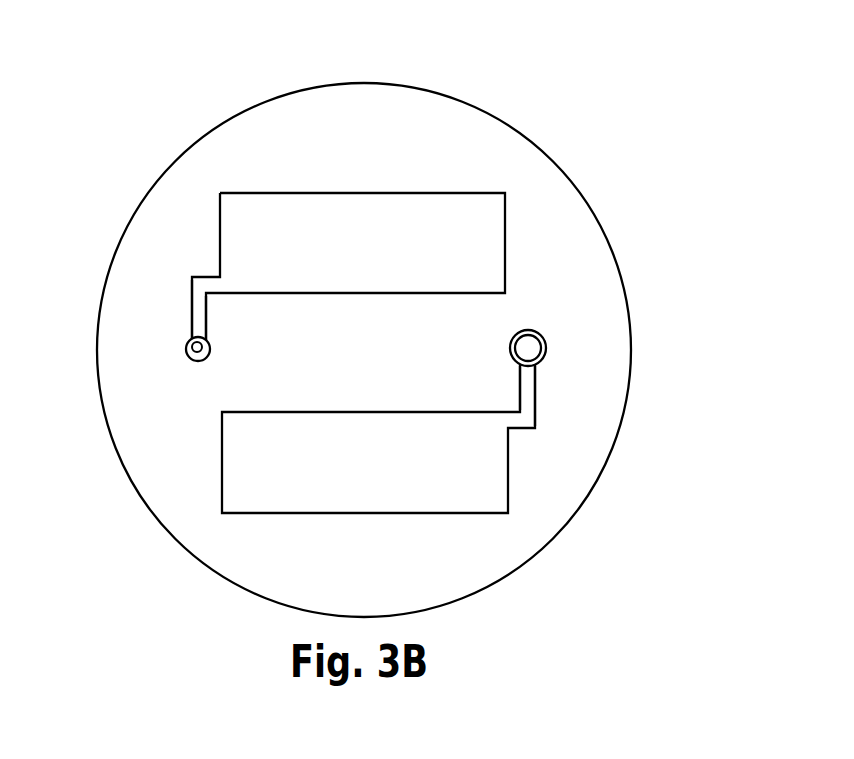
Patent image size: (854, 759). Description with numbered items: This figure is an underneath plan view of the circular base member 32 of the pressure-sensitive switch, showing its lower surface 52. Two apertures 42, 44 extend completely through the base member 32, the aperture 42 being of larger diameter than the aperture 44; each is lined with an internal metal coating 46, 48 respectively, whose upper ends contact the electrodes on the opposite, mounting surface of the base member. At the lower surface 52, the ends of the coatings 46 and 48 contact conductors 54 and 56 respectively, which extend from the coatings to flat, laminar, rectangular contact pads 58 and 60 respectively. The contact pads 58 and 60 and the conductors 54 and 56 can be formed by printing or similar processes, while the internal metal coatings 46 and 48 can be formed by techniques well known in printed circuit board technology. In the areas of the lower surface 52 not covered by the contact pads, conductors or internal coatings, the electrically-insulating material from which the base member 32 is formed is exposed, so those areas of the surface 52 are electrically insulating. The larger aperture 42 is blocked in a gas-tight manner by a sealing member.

The base member 32 is at (585, 147).
The aperture 42 is at (528, 348).
The aperture 44 is at (194, 344).
The internal metal coating 46 is at (536, 364).
The internal metal coating 48 is at (193, 349).
The lower surface 52 is at (552, 267).
The conductor 54 is at (528, 408).
The conductor 56 is at (205, 283).
The contact pad 58 is at (383, 478).
The contact pad 60 is at (381, 258).